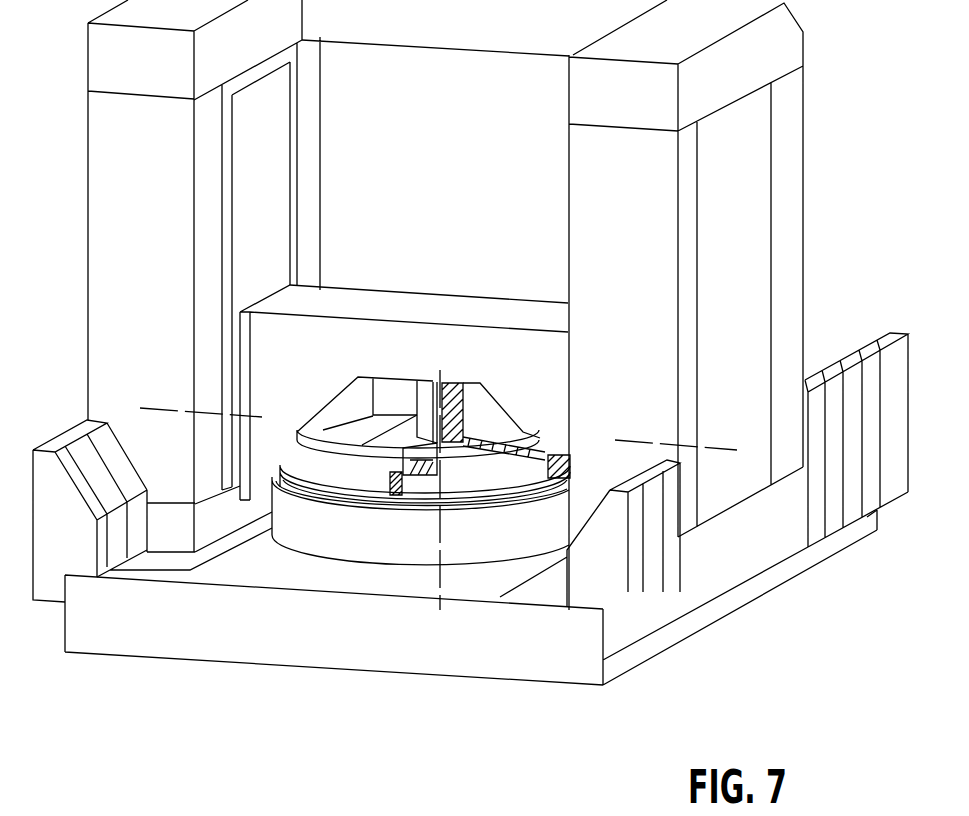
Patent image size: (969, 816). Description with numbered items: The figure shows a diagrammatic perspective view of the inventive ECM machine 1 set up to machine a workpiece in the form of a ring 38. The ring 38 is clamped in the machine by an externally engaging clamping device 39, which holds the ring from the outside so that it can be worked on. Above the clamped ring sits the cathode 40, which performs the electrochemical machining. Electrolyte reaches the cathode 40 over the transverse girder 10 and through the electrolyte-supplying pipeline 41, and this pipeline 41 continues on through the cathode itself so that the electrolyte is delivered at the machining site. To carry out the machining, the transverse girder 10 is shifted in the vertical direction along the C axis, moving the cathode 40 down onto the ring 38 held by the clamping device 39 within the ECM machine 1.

The ECM machine 1 is at (843, 63).
The transverse girder 10 is at (373, 340).
The ring 38 is at (465, 465).
The externally engaging clamping device 39 is at (367, 487).
The cathode 40 is at (517, 445).
The electrolyte-supplying pipeline 41 is at (457, 382).